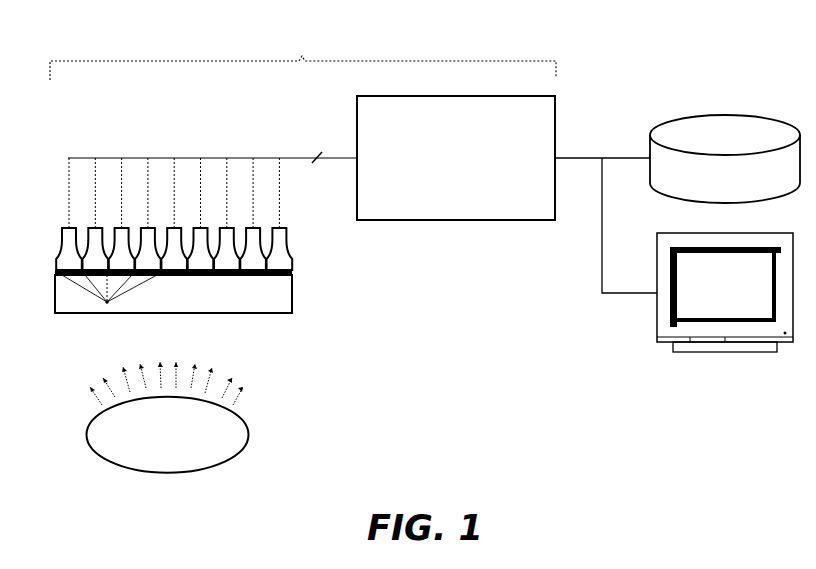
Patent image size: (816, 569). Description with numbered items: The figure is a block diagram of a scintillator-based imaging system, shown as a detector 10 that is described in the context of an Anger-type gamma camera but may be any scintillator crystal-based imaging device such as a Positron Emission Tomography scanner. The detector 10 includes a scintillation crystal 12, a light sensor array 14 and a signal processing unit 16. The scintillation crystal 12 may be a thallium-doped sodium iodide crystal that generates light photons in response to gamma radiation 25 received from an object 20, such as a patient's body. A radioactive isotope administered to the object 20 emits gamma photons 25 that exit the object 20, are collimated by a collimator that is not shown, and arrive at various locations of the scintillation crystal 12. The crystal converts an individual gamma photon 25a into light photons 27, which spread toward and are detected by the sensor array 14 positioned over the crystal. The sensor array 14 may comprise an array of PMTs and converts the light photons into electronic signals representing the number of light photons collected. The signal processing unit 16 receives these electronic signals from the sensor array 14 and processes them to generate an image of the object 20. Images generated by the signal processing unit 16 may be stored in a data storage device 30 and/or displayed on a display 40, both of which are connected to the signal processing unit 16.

The detector 10 is at (303, 57).
The scintillation crystal 12 is at (292, 298).
The light sensor array 14 is at (43, 258).
The signal processing unit 16 is at (490, 96).
The object 20 is at (248, 438).
The gamma radiation 25 is at (80, 403).
The gamma photon 25a is at (107, 305).
The light photons 27 is at (129, 289).
The data storage device 30 is at (760, 121).
The display 40 is at (765, 233).